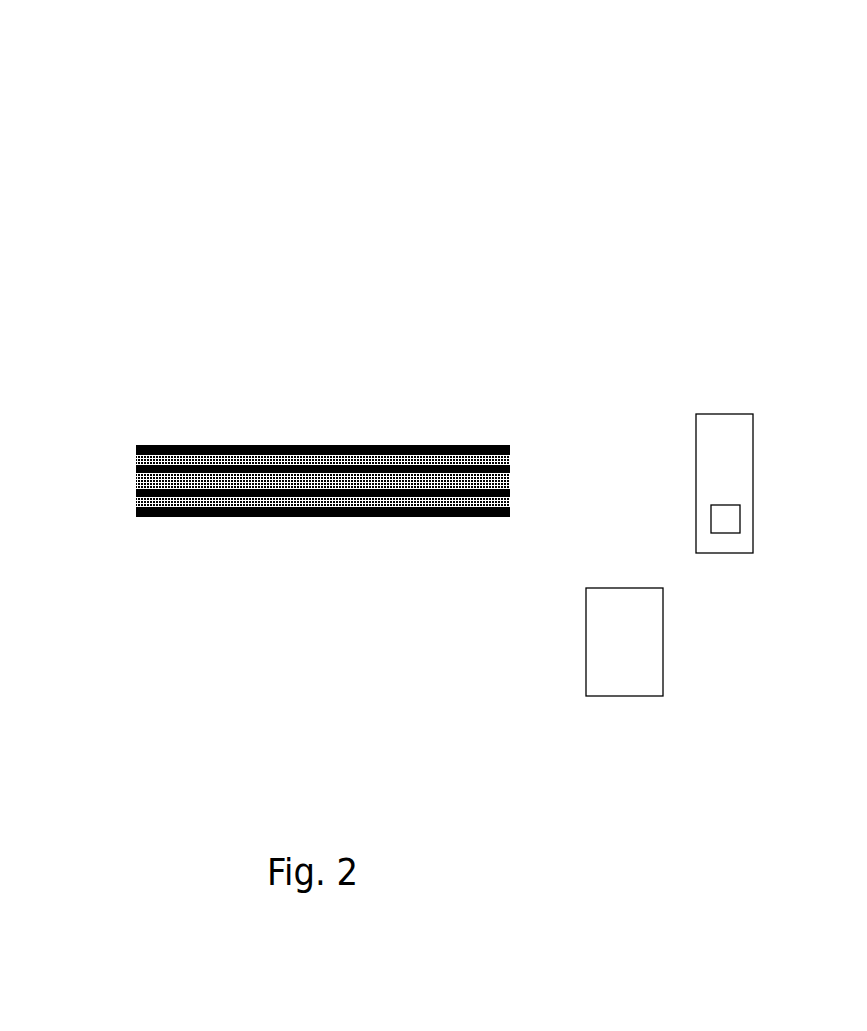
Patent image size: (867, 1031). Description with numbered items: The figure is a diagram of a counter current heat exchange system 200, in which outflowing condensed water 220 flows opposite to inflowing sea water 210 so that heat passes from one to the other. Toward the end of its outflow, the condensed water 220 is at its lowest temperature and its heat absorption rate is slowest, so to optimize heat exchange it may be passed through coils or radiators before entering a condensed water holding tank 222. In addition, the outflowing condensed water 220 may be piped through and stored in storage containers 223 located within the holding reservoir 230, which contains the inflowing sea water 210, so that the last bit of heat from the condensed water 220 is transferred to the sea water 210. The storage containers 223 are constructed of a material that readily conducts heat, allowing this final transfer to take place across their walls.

The counter current heat exchange system 200 is at (107, 197).
The sea water 210 is at (130, 457).
The condensed water 220 is at (502, 485).
The condensed water holding tank 222 is at (565, 655).
The storage container 223 is at (712, 535).
The holding reservoir 230 is at (715, 422).